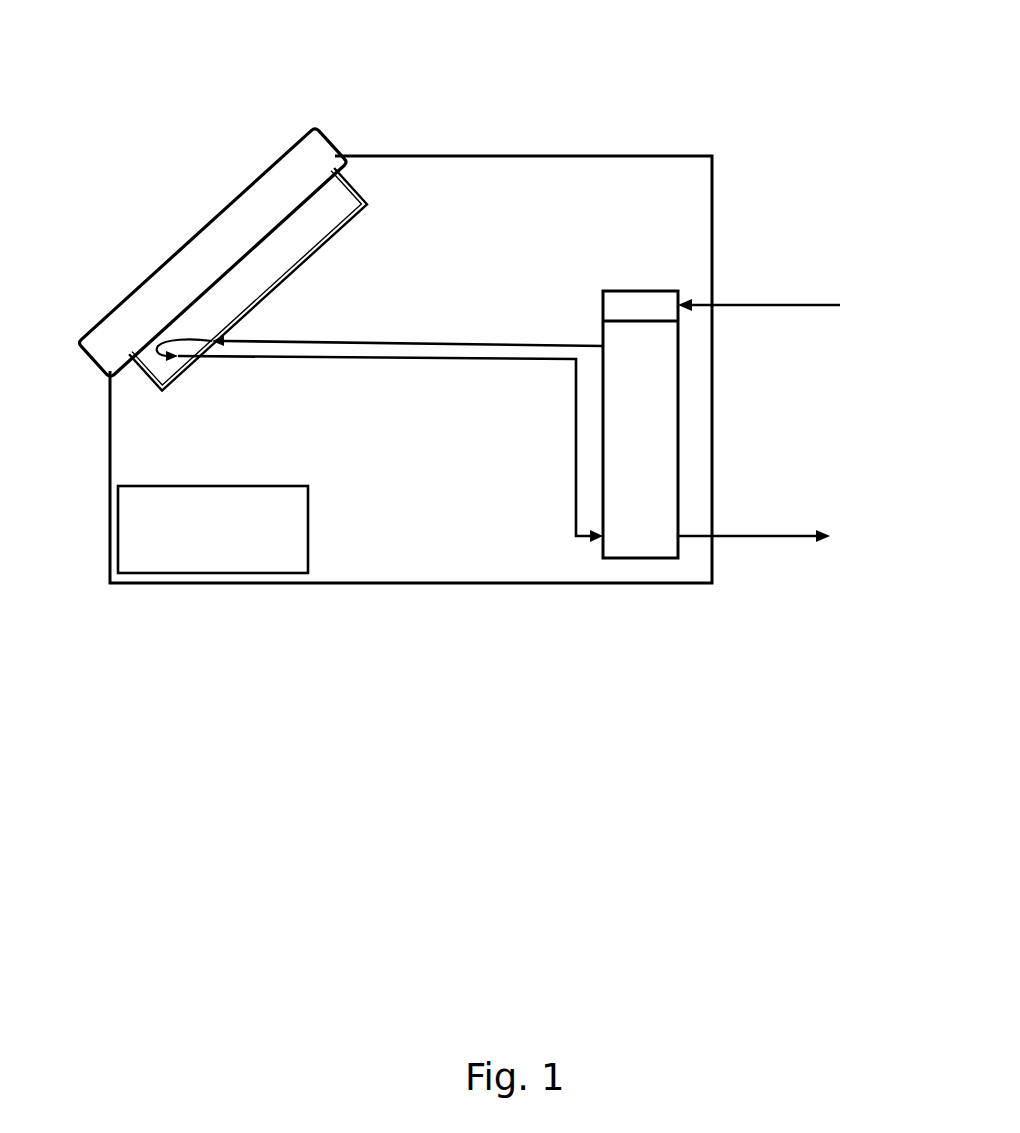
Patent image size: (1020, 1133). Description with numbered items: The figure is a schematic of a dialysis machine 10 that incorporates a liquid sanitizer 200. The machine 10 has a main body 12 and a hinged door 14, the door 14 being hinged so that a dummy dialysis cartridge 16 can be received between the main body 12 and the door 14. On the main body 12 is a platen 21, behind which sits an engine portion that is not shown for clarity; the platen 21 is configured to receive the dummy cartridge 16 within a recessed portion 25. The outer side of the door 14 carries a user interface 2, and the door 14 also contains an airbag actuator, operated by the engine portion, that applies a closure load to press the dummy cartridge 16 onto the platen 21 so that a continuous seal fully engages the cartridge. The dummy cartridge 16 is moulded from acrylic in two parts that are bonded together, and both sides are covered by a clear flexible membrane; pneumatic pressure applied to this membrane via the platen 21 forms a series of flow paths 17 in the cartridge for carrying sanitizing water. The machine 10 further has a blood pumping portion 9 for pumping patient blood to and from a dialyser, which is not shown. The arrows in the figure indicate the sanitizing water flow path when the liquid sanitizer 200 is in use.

The dialysis machine 10 is at (530, 86).
The liquid sanitizer 200 is at (798, 168).
The main body 12 is at (606, 154).
The hinged door 14 is at (330, 148).
The user interface 2 is at (256, 215).
The platen 21 is at (292, 241).
The recessed portion 25 is at (313, 247).
The flow paths 17 is at (157, 350).
The dummy dialysis cartridge 16 is at (143, 373).
The blood pumping portion 9 is at (188, 563).